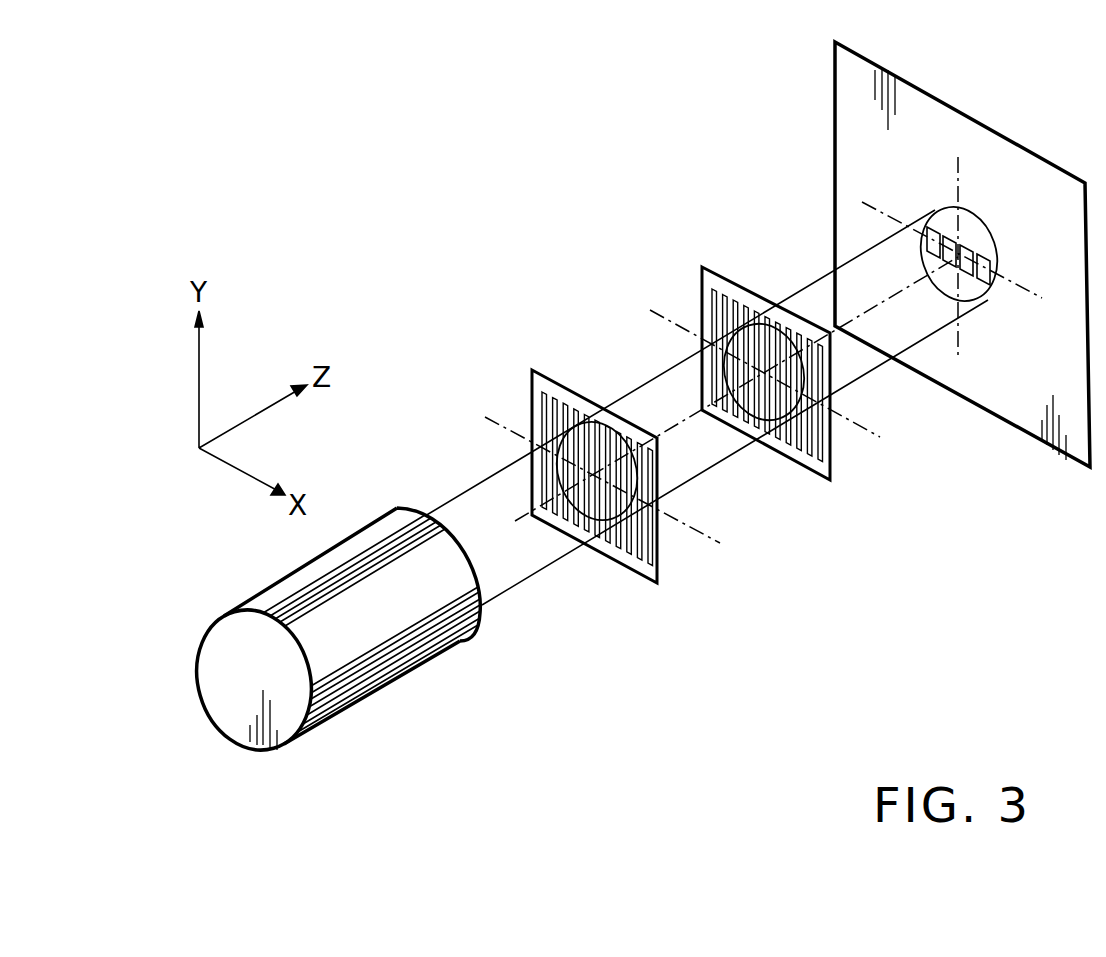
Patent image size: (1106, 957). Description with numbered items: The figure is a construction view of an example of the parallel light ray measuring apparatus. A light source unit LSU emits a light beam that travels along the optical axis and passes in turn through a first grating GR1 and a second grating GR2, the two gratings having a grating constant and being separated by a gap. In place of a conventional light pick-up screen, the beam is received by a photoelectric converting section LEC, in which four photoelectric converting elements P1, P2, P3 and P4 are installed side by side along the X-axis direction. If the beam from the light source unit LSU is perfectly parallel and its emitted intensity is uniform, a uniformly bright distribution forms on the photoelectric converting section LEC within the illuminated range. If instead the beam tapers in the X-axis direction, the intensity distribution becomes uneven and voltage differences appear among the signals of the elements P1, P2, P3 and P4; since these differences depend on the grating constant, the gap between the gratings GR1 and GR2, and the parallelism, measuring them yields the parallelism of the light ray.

The light source unit LSU is at (397, 685).
The first grating GR1 is at (530, 385).
The second grating GR2 is at (698, 280).
The photoelectric converting section LEC is at (985, 413).
The photoelectric converting element P1 is at (992, 268).
The photoelectric converting element P2 is at (975, 252).
The photoelectric converting element P3 is at (958, 238).
The photoelectric converting element P4 is at (940, 226).